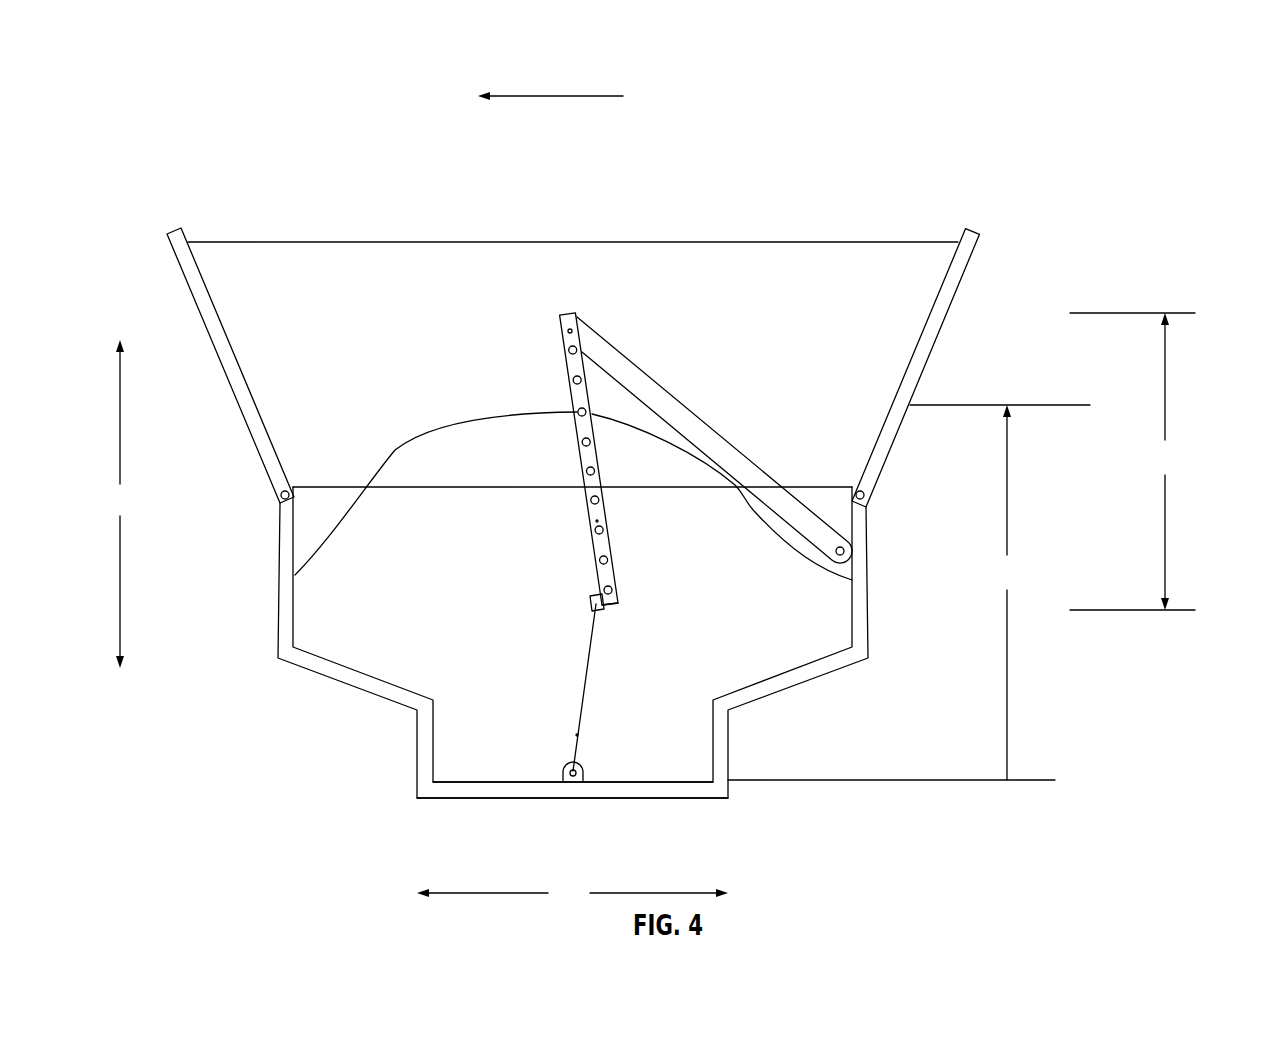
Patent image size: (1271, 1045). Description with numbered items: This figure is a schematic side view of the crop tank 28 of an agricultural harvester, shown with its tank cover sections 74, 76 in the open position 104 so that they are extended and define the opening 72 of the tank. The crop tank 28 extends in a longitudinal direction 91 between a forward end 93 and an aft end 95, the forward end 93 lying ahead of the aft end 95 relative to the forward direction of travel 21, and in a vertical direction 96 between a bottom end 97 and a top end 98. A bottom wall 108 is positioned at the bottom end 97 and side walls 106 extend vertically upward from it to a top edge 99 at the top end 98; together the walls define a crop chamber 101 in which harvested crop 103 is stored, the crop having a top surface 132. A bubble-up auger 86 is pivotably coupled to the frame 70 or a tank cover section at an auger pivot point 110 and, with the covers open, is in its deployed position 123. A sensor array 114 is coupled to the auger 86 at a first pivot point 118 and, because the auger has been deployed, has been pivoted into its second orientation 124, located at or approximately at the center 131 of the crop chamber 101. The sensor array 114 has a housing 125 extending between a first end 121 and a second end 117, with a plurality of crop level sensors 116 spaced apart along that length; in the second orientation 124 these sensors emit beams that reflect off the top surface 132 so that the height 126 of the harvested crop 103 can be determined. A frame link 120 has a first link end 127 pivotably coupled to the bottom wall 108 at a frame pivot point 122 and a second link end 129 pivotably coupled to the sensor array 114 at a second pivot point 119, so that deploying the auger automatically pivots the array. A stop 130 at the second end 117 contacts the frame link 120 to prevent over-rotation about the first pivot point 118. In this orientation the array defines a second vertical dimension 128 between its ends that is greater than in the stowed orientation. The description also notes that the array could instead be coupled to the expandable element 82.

The crop tank 28 is at (750, 62).
The forward direction of travel 21 is at (537, 94).
The opening 72 is at (555, 186).
The top end 98 is at (351, 206).
The open position 104 is at (950, 206).
The tank cover section 76 is at (210, 343).
The tank cover section 74 is at (928, 338).
The frame 70 is at (199, 580).
The side walls 106 is at (278, 632).
The bottom wall 108 is at (638, 790).
The top edge 99 is at (333, 486).
The forward end 93 is at (309, 716).
The aft end 95 is at (810, 708).
The bottom end 97 is at (450, 824).
The top surface 132 is at (400, 443).
The first pivot point 118 is at (589, 445).
The first end 121 is at (568, 315).
The crop level sensors 116 is at (580, 415).
The housing 125 is at (587, 471).
The second pivot point 119 is at (599, 500).
The second link end 129 is at (596, 521).
The sensor array 114 is at (609, 531).
The second end 117 is at (622, 602).
The center 131 is at (549, 292).
The bubble-up auger 86 is at (750, 445).
The auger pivot point 110 is at (852, 551).
The frame link 120 is at (566, 714).
The stop 130 is at (602, 611).
The frame pivot point 122 is at (570, 777).
The first link end 127 is at (577, 735).
The expandable element 82 is at (448, 383).
The harvested crop 103 is at (540, 593).
The crop chamber 101 is at (810, 340).
The deployed position 123 is at (690, 315).
The second orientation 124 is at (670, 340).
The vertical direction 96 is at (118, 504).
The height 126 is at (909, 592).
The second vertical dimension 128 is at (1132, 461).
The longitudinal direction 91 is at (572, 891).